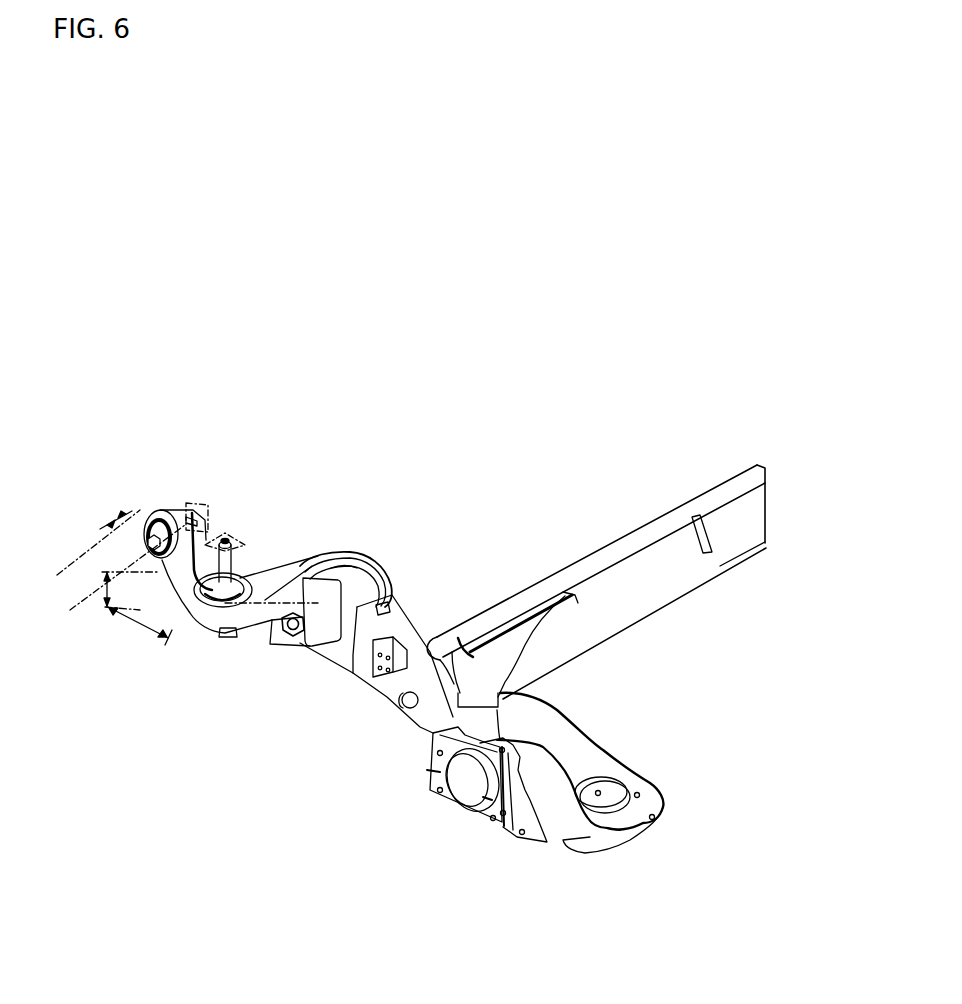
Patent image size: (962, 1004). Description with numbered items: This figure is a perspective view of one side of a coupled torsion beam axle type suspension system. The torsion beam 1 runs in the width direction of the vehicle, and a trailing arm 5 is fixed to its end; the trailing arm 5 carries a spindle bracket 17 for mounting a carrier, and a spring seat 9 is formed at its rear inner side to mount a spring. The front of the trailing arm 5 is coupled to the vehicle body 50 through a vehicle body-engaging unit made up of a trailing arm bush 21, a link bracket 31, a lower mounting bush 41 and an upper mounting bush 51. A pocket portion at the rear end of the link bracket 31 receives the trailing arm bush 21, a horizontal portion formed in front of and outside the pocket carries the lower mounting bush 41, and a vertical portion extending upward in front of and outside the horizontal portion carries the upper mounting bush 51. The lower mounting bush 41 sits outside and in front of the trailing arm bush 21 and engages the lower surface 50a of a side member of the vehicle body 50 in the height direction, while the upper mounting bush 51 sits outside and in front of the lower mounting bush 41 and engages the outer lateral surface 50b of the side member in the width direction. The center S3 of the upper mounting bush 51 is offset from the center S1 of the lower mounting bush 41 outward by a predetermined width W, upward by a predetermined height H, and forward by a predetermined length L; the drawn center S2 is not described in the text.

The torsion beam 1 is at (668, 582).
The trailing arm 5 is at (390, 688).
The spring seat 9 is at (662, 790).
The spindle bracket 17 is at (433, 792).
The trailing arm bush 21 is at (348, 563).
The link bracket 31 is at (244, 620).
The lower mounting bush 41 is at (243, 563).
The vehicle body 50 is at (238, 375).
The lower surface of side member 50a is at (227, 530).
The outer lateral surface of side member 50b is at (187, 527).
The upper mounting bush 51 is at (163, 507).
The center of lower mounting bush S1 is at (222, 635).
The second surface S2 is at (335, 566).
The center of upper mounting bush S3 is at (183, 503).
The predetermined width W is at (123, 510).
The predetermined height H is at (105, 595).
The predetermined length L is at (137, 625).